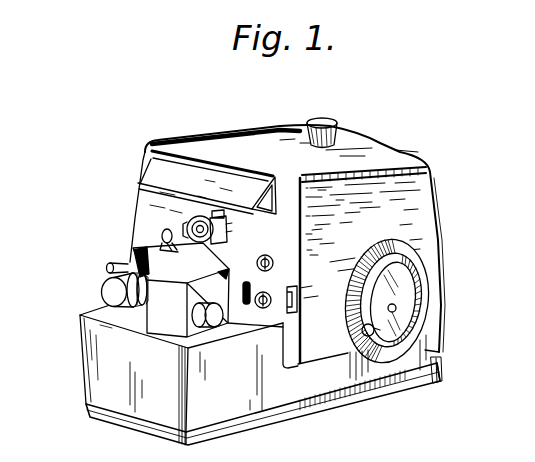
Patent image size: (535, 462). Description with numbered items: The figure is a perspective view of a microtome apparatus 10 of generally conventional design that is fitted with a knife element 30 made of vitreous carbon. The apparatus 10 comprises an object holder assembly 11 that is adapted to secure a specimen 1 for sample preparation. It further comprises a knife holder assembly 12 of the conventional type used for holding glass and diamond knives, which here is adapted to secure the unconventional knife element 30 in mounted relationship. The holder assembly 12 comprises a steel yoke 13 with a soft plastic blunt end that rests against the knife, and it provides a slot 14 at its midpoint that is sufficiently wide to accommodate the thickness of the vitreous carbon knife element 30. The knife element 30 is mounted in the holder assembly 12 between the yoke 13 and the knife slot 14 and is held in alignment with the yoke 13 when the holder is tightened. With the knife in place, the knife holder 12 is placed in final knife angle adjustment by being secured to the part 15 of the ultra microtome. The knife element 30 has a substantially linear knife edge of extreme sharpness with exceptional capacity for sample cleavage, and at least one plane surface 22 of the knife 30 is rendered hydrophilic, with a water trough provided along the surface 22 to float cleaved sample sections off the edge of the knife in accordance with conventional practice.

The microtome apparatus 10 is at (104, 175).
The object holder assembly 11 is at (217, 212).
The specimen 1 is at (201, 216).
The plane surface 22 is at (181, 222).
The knife element 30 is at (190, 226).
The slot 14 is at (165, 232).
The knife holder assembly 12 is at (132, 262).
The steel yoke 13 is at (222, 250).
The knife angle adjustment mount 15 is at (229, 270).